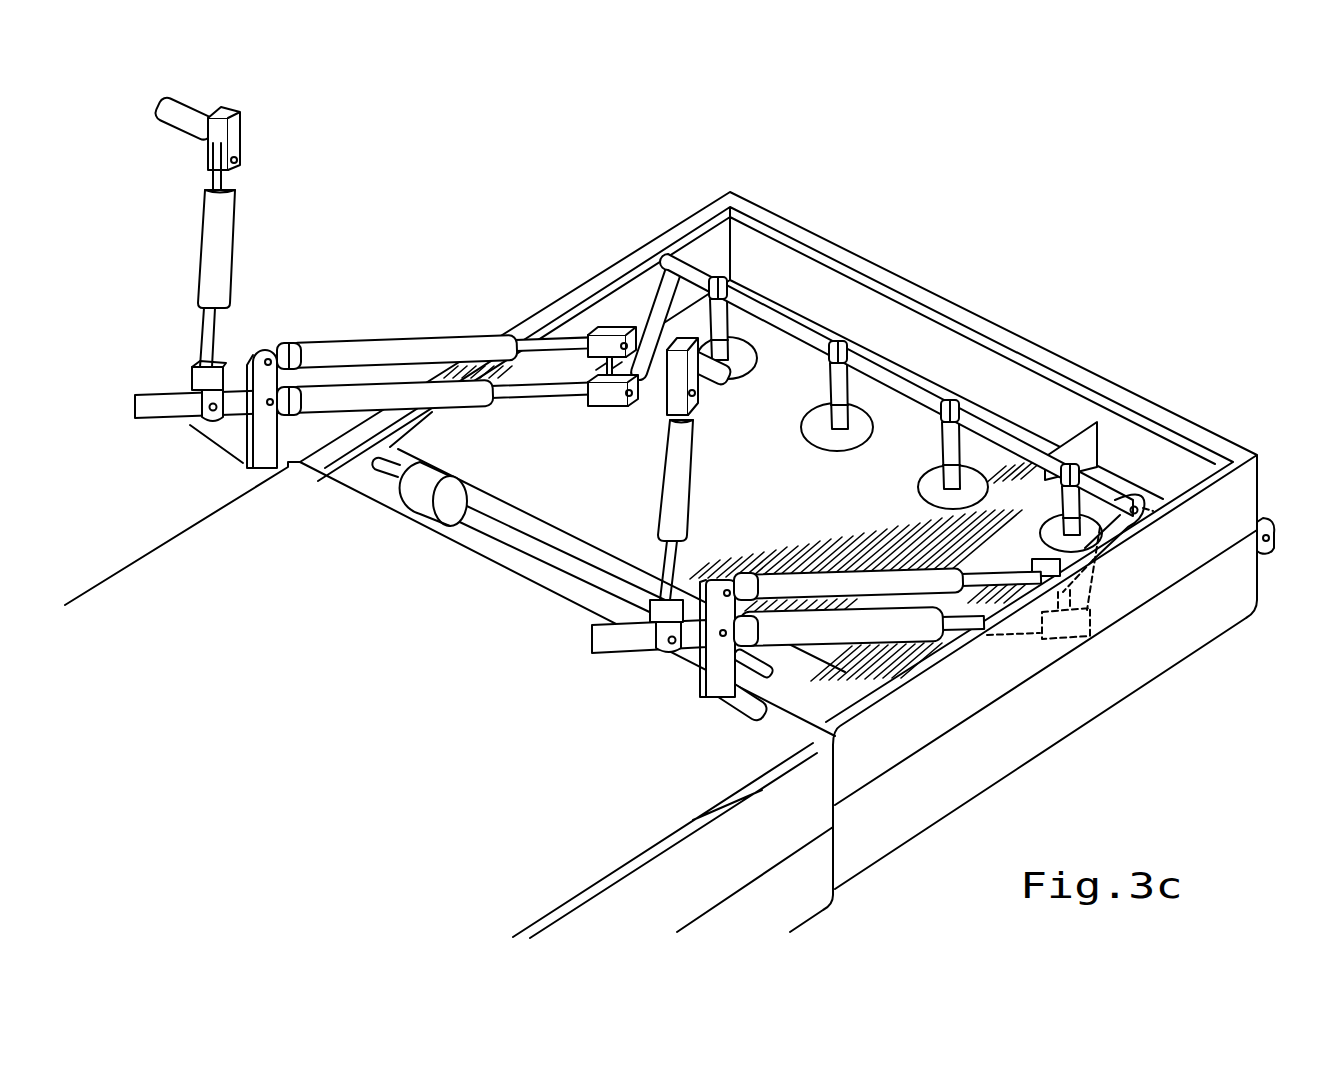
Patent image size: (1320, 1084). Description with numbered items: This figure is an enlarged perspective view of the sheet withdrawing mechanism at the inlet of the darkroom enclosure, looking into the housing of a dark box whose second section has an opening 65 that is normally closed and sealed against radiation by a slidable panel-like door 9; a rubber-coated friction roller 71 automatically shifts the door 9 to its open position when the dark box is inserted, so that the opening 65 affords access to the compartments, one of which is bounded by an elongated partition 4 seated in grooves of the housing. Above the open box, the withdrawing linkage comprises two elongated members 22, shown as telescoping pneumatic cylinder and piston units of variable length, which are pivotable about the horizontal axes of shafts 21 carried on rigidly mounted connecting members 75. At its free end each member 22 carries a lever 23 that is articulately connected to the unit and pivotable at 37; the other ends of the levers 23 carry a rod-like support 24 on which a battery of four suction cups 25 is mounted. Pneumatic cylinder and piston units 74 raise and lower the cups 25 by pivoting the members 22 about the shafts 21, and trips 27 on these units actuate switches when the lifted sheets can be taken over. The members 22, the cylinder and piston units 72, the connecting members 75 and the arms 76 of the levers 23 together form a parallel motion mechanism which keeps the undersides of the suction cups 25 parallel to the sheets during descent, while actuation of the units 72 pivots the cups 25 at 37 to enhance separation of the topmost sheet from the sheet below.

The opening 65 is at (790, 236).
The partition 4 is at (1072, 440).
The suction cup 25 is at (917, 485).
The lever 23 is at (648, 330).
The rod-like support 24 is at (906, 390).
The trip 27 is at (155, 413).
The shaft 21 is at (268, 404).
The pneumatic cylinder and piston unit 74 is at (226, 246).
The connecting member 75 is at (268, 450).
The cylinder and piston unit 72 is at (416, 345).
The elongated member 22 is at (465, 400).
The arm 76 is at (618, 368).
The pivot 37 is at (641, 400).
The door 9 is at (536, 528).
The roller 71 is at (413, 499).